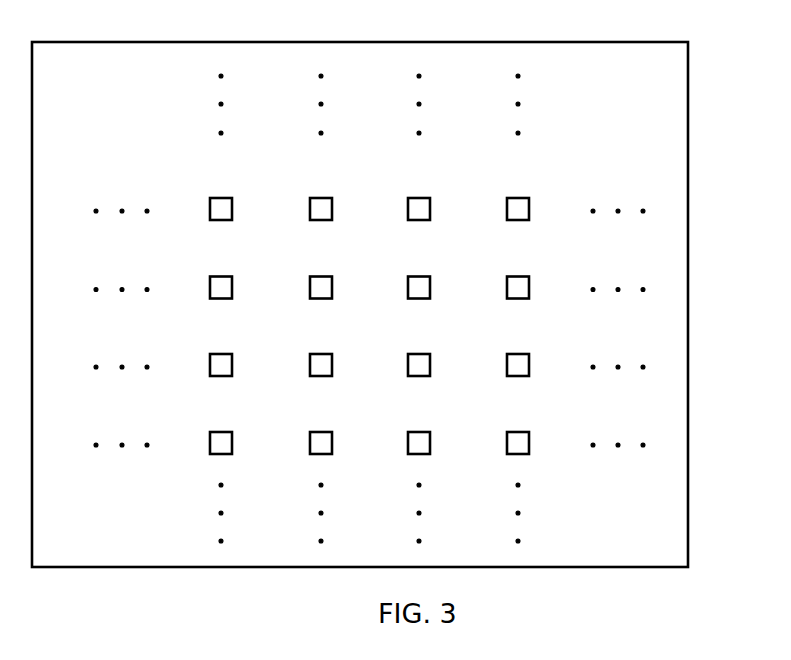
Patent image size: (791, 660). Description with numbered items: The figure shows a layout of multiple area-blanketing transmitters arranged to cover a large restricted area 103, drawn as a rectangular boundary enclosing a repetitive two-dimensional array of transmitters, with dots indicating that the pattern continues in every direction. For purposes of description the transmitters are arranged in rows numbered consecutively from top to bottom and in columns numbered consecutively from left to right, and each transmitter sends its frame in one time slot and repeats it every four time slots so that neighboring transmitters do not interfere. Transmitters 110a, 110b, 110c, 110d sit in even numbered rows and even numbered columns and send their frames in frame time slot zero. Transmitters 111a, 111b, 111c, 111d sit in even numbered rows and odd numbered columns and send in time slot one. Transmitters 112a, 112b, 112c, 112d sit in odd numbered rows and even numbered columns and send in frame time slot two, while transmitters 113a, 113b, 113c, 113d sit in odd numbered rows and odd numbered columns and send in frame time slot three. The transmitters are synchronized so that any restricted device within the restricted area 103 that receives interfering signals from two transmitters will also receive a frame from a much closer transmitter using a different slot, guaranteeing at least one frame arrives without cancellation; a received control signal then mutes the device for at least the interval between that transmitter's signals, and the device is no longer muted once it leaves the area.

The restricted area 103 is at (467, 42).
The transmitter in even row and even column 110a is at (221, 197).
The transmitter in even row and even column 110b is at (419, 197).
The transmitter in even row and even column 110c is at (220, 353).
The transmitter in even row and even column 110d is at (419, 353).
The transmitter in even row and odd column 111a is at (321, 197).
The transmitter in even row and odd column 111b is at (518, 197).
The transmitter in even row and odd column 111c is at (320, 353).
The transmitter in even row and odd column 111d is at (518, 353).
The transmitter in odd row and even column 112a is at (221, 276).
The transmitter in odd row and even column 112b is at (419, 276).
The transmitter in odd row and even column 112c is at (220, 431).
The transmitter in odd row and even column 112d is at (419, 431).
The transmitter in odd row and odd column 113a is at (321, 276).
The transmitter in odd row and odd column 113b is at (518, 276).
The transmitter in odd row and odd column 113c is at (320, 431).
The transmitter in odd row and odd column 113d is at (518, 431).